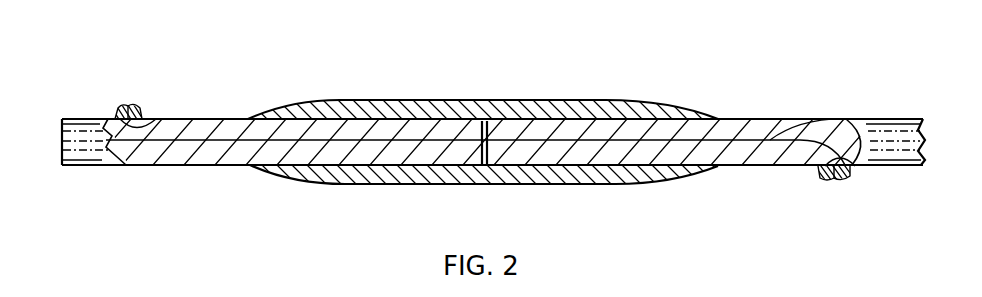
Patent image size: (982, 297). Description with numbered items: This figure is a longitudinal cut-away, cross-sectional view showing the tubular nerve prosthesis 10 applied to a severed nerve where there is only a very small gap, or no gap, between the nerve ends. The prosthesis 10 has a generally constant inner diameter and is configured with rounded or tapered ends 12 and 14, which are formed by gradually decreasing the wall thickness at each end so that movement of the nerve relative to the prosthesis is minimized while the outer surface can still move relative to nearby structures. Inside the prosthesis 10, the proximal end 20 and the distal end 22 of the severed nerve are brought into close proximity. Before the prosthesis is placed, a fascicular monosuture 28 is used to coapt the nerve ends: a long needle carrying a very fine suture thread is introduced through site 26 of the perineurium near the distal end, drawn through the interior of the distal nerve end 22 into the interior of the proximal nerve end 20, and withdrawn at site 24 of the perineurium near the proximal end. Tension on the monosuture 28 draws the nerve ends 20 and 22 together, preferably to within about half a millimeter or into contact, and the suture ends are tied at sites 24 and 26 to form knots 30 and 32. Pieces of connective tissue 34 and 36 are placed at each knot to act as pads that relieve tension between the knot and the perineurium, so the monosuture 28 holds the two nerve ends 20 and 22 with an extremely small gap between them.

The tubular nerve prosthesis 10 is at (529, 92).
The tapered end 12 is at (248, 118).
The tapered end 14 is at (720, 119).
The proximal end 20 is at (480, 129).
The distal end 22 is at (489, 147).
The site of the perineurium 24 is at (153, 118).
The site of the perineurium 26 is at (857, 170).
The fascicular monosuture 28 is at (746, 138).
The knot 30 is at (128, 106).
The knot 32 is at (834, 180).
The piece of connective tissue 34 is at (116, 110).
The piece of connective tissue 36 is at (826, 178).